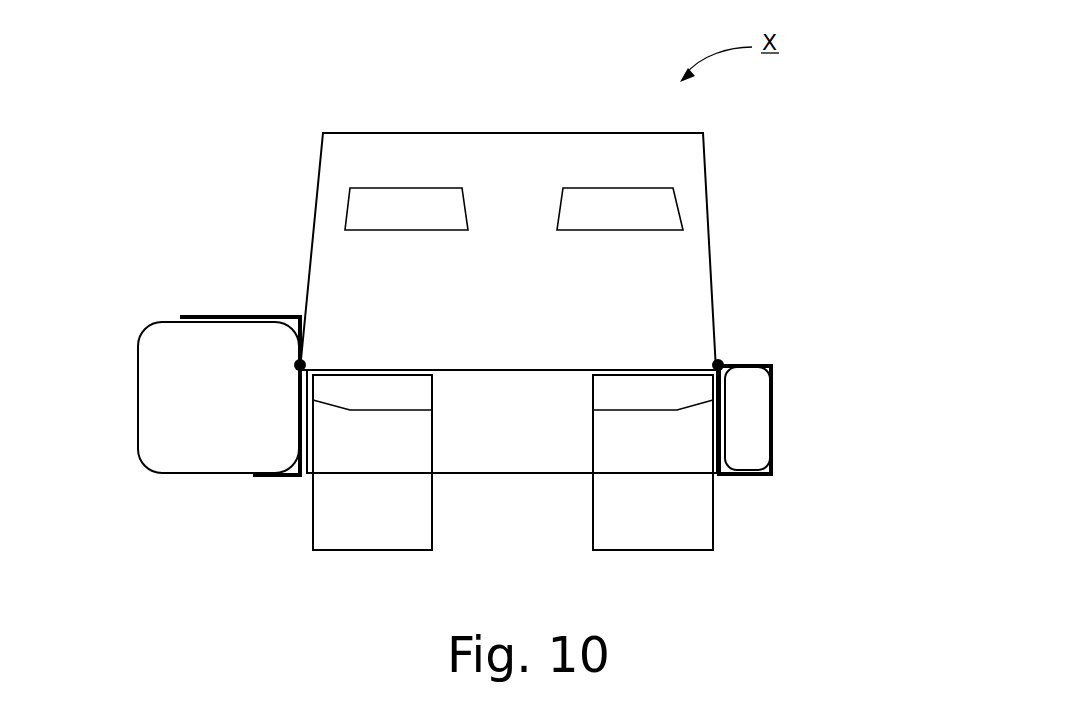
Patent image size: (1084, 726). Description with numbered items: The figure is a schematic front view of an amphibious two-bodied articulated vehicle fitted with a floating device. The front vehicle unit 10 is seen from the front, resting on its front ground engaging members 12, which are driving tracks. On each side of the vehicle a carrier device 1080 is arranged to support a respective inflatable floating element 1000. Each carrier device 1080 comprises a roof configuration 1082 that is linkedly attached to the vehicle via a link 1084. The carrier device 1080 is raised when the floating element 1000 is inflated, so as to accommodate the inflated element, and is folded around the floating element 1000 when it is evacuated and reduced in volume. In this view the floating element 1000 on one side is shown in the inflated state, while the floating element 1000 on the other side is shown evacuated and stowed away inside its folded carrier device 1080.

The front vehicle unit 10 is at (398, 128).
The front ground engaging members 12 is at (364, 560).
The floating element 1000 is at (193, 482).
The carrier device 1080 is at (258, 308).
The roof configuration 1082 is at (188, 317).
The link 1084 is at (300, 365).